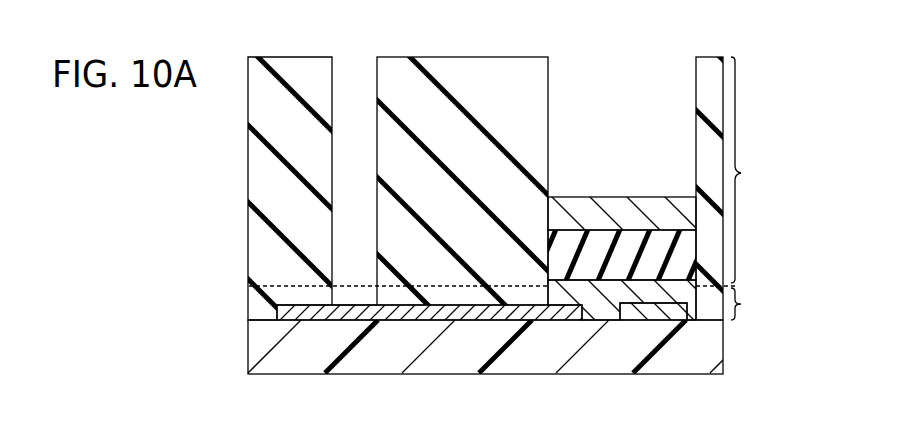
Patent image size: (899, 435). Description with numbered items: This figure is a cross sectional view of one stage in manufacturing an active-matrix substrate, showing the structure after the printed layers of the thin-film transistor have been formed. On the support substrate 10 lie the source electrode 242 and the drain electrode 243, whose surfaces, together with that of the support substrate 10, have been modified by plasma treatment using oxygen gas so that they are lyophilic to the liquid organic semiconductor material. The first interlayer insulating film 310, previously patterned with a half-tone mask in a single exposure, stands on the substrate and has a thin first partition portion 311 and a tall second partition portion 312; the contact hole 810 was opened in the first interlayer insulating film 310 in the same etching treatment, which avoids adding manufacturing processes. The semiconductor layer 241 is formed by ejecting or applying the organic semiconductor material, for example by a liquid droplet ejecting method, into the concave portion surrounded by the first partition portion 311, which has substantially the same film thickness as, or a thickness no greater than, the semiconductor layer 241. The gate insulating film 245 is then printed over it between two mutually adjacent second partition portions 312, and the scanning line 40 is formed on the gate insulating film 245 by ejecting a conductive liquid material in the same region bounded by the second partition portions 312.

The support substrate 10 is at (712, 345).
The scanning line 40 is at (564, 215).
The semiconductor layer 241 is at (655, 300).
The source electrode 242 is at (657, 313).
The drain electrode 243 is at (389, 312).
The gate insulating film 245 is at (612, 258).
The first interlayer insulating film 310 is at (296, 78).
The first partition portion 311 is at (755, 304).
The second partition portion 312 is at (755, 170).
The contact hole 810 is at (372, 192).